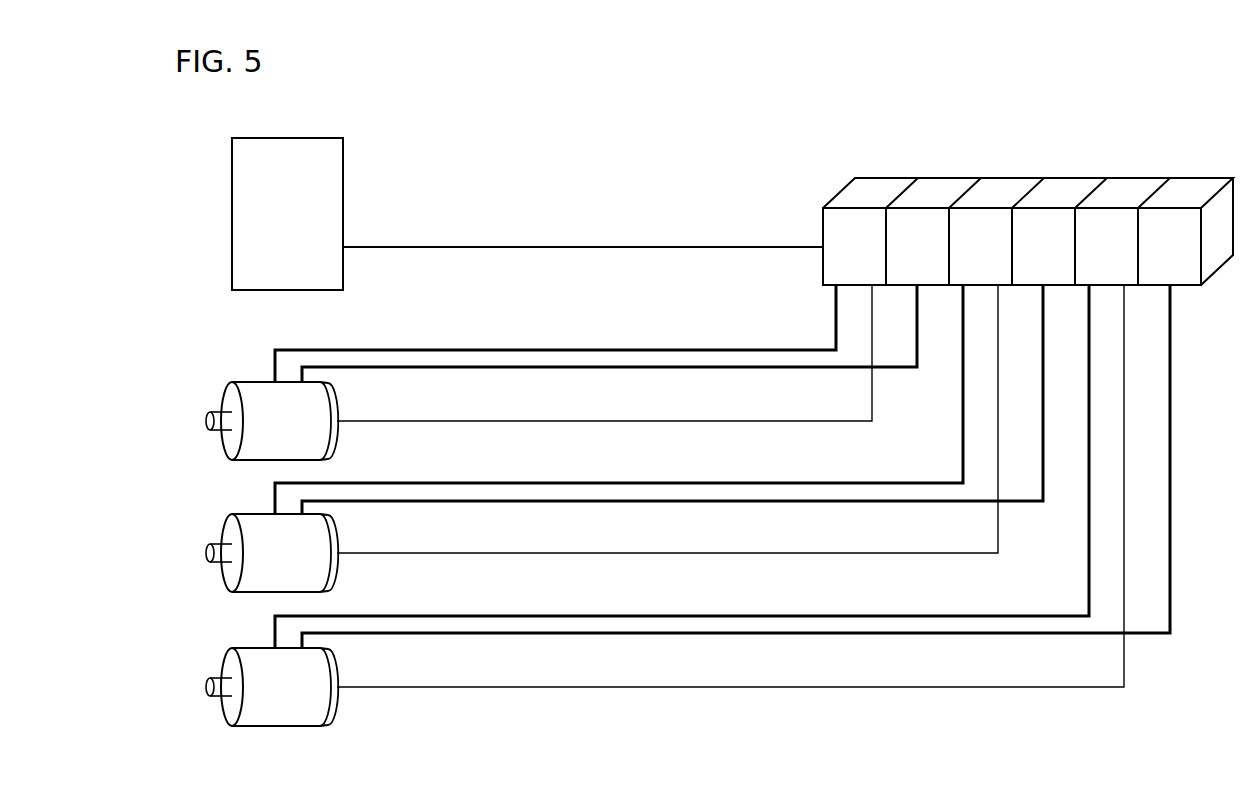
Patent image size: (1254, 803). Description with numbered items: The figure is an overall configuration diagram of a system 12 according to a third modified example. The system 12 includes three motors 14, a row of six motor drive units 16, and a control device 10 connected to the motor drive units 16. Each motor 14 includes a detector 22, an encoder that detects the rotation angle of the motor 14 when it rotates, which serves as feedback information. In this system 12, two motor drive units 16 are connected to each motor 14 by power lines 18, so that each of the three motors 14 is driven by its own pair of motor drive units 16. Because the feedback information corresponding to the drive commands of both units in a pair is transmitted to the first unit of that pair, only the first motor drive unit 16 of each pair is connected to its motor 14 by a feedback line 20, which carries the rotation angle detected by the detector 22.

The control device 10 is at (343, 182).
The system 12 is at (483, 101).
The motor 14 is at (226, 398).
The motor drive unit 16 is at (1028, 196).
The power line 18 is at (498, 351).
The feedback line 20 is at (698, 687).
The detector 22 is at (330, 408).